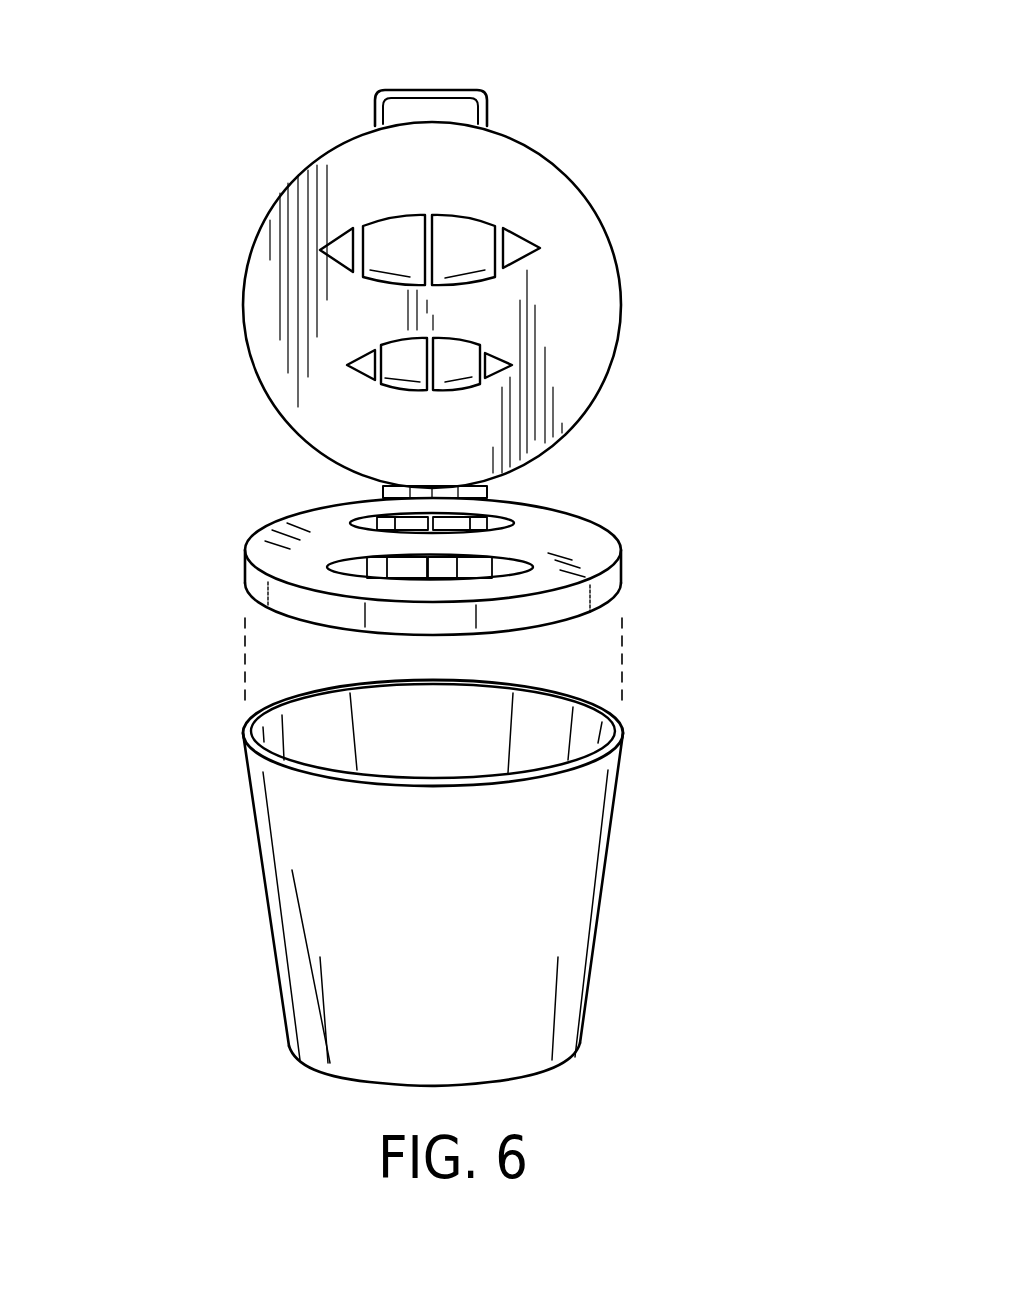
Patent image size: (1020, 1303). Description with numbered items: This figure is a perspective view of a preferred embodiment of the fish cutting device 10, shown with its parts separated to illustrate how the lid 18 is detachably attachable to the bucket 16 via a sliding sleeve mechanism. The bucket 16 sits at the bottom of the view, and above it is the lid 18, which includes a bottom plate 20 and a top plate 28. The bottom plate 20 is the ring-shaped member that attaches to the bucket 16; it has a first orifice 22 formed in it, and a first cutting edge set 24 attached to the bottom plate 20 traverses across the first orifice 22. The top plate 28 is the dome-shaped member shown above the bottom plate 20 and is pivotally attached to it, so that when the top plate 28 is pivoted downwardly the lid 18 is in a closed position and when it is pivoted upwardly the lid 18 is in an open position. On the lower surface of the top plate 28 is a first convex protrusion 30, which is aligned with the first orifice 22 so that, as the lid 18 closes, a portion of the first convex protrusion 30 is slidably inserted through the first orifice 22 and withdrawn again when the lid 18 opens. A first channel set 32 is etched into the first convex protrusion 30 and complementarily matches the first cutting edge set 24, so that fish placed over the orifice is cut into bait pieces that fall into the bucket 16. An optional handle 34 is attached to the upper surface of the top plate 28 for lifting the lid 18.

The fish cutting device 10 is at (195, 880).
The bucket 16 is at (550, 865).
The lid 18 is at (270, 405).
The bottom plate 20 is at (626, 567).
The first orifice 22 is at (363, 522).
The first cutting edge set 24 is at (470, 512).
The top plate 28 is at (595, 328).
The first convex protrusion 30 is at (460, 340).
The first channel set 32 is at (430, 216).
The handle 34 is at (456, 90).